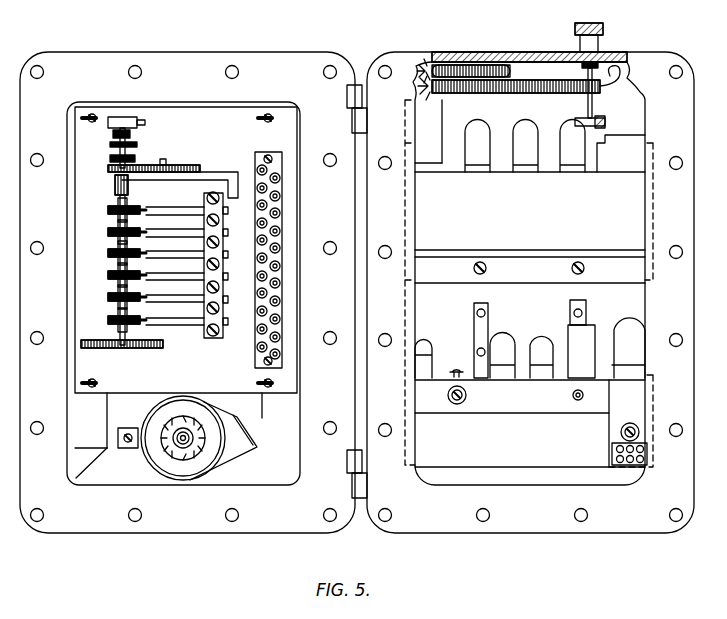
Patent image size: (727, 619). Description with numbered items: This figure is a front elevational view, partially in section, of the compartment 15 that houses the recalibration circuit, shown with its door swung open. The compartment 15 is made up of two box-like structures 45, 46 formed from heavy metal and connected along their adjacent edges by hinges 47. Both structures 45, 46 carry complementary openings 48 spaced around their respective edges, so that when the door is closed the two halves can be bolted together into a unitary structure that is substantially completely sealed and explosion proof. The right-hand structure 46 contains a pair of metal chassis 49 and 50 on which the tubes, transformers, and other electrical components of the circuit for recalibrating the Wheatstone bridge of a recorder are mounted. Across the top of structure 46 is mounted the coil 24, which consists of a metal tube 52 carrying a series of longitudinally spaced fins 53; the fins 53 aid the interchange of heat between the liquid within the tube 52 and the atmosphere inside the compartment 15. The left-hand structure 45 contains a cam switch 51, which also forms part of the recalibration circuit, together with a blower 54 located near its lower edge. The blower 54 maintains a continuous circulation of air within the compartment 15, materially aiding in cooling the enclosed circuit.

The compartment 15 is at (529, 297).
The coil 24 is at (512, 97).
The box-like structure 45 is at (187, 305).
The box-like structure 46 is at (640, 520).
The hinges 47 is at (352, 97).
The complementary openings 48 is at (128, 516).
The metal chassis 49 is at (437, 405).
The metal chassis 50 is at (533, 224).
The cam switch 51 is at (142, 163).
The metal tube 52 is at (537, 90).
The fins 53 is at (575, 84).
The blower 54 is at (230, 450).